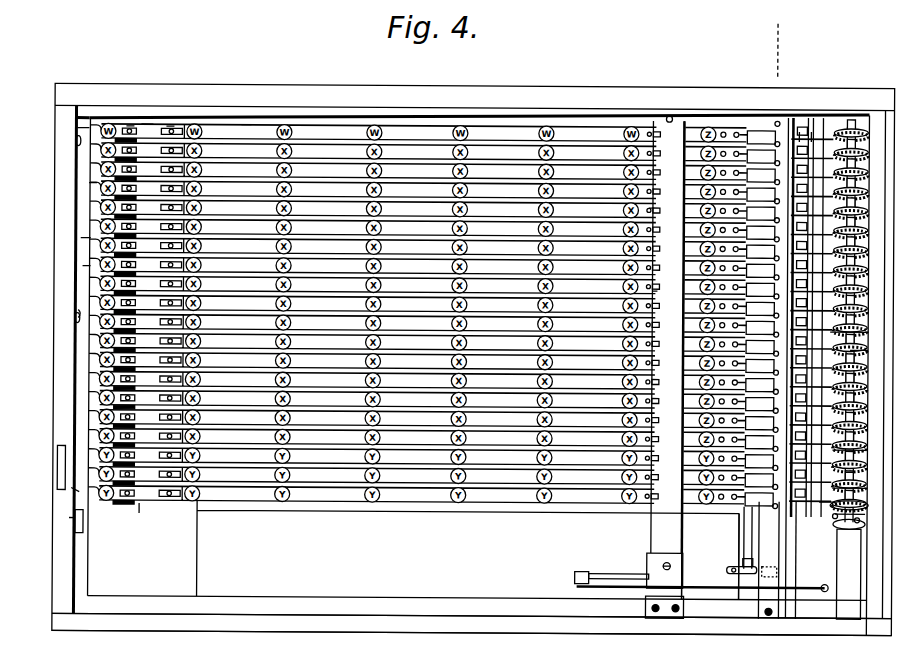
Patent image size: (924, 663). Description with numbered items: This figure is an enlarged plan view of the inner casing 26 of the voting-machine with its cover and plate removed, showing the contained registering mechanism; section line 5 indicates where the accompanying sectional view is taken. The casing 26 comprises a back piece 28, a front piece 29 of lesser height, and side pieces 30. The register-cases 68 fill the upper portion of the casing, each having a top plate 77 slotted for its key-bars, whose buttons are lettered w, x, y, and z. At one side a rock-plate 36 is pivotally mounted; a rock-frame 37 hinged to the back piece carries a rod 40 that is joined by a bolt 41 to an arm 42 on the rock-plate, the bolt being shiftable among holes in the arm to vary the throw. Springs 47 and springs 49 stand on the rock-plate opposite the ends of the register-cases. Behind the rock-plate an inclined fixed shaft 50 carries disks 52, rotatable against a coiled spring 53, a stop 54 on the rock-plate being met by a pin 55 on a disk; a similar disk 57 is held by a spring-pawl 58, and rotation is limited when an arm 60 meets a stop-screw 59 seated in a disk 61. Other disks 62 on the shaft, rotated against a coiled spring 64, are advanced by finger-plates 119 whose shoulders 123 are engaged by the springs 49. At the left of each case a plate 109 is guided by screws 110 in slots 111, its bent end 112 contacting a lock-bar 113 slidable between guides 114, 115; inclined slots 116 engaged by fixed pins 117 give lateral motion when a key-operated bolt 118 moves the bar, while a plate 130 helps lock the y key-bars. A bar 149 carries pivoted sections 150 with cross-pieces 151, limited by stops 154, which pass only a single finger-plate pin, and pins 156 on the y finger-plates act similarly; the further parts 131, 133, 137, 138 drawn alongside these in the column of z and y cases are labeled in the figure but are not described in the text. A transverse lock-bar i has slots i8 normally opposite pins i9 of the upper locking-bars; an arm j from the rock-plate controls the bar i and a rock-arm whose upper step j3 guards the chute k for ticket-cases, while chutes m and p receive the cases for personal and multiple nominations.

The section line 5 is at (785, 42).
The casing 26 is at (472, 636).
The back piece 28 is at (555, 95).
The front piece 29 is at (344, 632).
The side pieces 30 is at (74, 219).
The rock-plate 36 is at (839, 574).
The rock-frame 37 is at (478, 550).
The rod 40 is at (746, 542).
The bolt 41 is at (742, 560).
The arm 42 is at (768, 560).
The springs 47 is at (800, 135).
The springs 49 is at (812, 135).
The fixed shaft 50 is at (860, 182).
The disks 52 is at (867, 484).
The coiled spring 53 is at (868, 470).
The stop 54 is at (830, 500).
The pin 55 is at (862, 442).
The disk 57 is at (870, 502).
The spring-pawl 58 is at (866, 510).
The stop-screw 59 is at (852, 526).
The arm 60 is at (834, 516).
The disk 61 is at (860, 518).
The disks 62 is at (861, 328).
The coiled spring 64 is at (860, 346).
The register-cases 68 is at (416, 125).
The top plate 77 is at (247, 130).
The plate 109 is at (147, 126).
The screws 110 is at (173, 128).
The slots 111 is at (168, 128).
The bent end 112 is at (90, 185).
The lock-bar 113 is at (86, 240).
The guide 114 is at (72, 492).
The guide 115 is at (76, 130).
The inclined slots 116 is at (75, 145).
The fixed pins 117 is at (78, 312).
The key-operated bolt 118 is at (70, 520).
The finger-plates 119 is at (818, 135).
The shoulders 123 is at (790, 130).
The plate 130 is at (152, 502).
The contact 131 is at (762, 500).
The contact 133 is at (763, 404).
The contact 137 is at (762, 480).
The contact 138 is at (762, 460).
The bar 149 is at (763, 273).
The sections 150 is at (763, 328).
The cross-pieces 151 is at (763, 366).
The stops 154 is at (779, 560).
The pins 156 is at (733, 508).
The lock-bar i is at (665, 367).
The slots i8 is at (662, 287).
The pins i9 is at (642, 201).
The arm j is at (703, 595).
The upper step j3 is at (571, 574).
The chute k is at (619, 569).
The chute m is at (90, 268).
The chute p is at (58, 454).